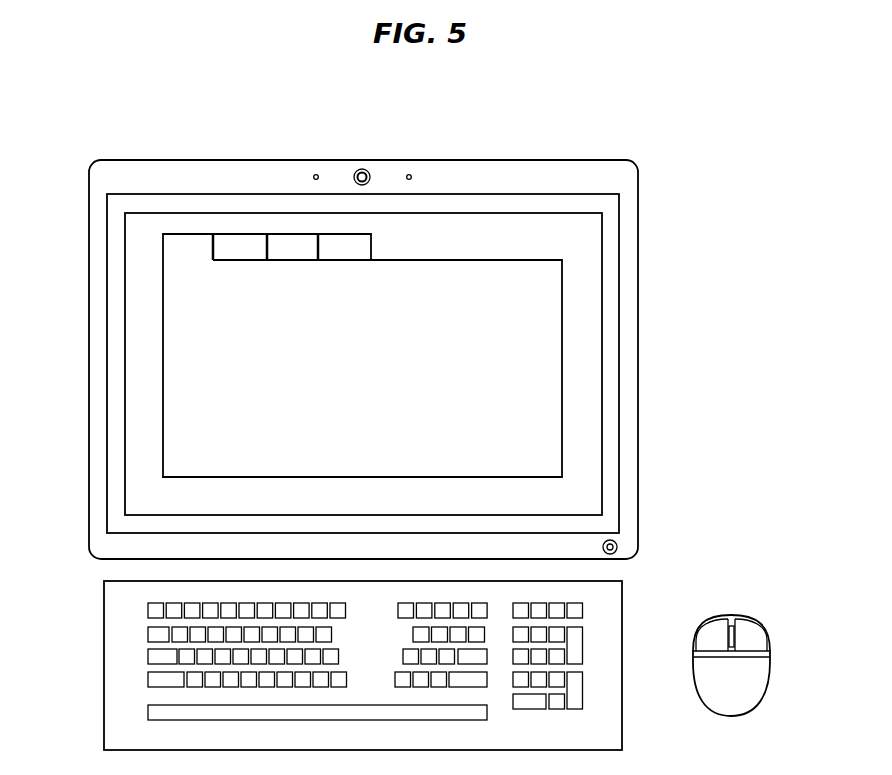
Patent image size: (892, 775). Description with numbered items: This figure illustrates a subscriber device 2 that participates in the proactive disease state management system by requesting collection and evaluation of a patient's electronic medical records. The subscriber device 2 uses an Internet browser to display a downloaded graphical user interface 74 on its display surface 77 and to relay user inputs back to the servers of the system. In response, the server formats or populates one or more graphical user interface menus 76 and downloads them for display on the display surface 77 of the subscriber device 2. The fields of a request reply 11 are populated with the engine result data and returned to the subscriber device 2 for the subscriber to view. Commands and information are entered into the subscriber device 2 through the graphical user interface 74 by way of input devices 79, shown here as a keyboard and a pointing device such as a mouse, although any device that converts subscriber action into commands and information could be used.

The subscriber device 2 is at (564, 160).
The display surface 77 is at (610, 254).
The graphical user interface 74 is at (601, 346).
The graphical user interface menus 76 is at (163, 246).
The request reply 11 is at (197, 257).
The input devices 79 is at (382, 659).